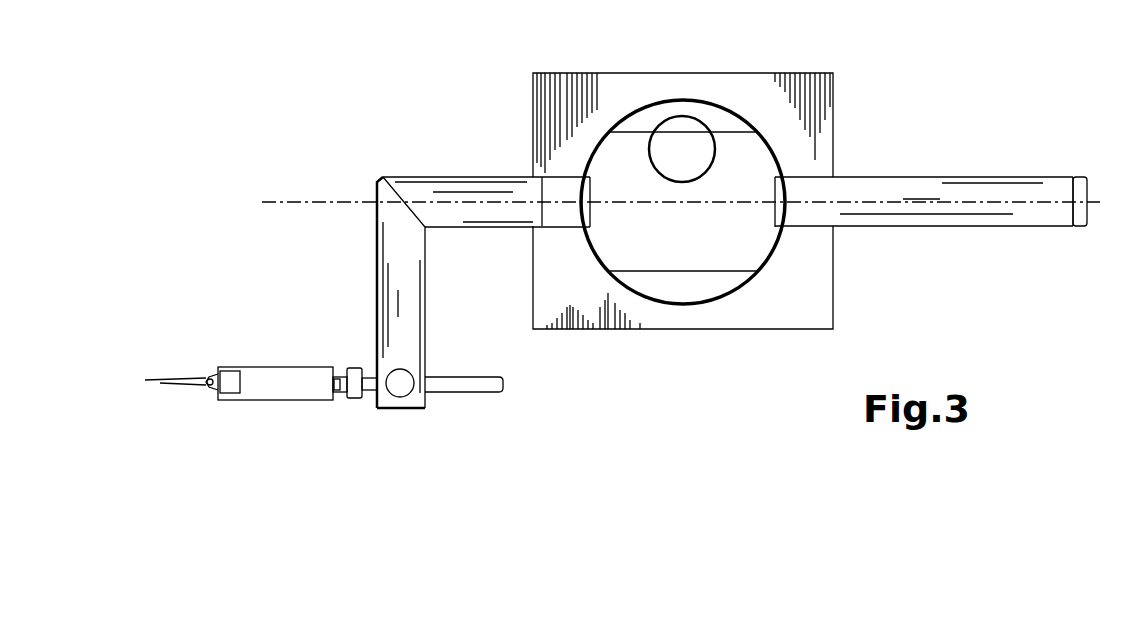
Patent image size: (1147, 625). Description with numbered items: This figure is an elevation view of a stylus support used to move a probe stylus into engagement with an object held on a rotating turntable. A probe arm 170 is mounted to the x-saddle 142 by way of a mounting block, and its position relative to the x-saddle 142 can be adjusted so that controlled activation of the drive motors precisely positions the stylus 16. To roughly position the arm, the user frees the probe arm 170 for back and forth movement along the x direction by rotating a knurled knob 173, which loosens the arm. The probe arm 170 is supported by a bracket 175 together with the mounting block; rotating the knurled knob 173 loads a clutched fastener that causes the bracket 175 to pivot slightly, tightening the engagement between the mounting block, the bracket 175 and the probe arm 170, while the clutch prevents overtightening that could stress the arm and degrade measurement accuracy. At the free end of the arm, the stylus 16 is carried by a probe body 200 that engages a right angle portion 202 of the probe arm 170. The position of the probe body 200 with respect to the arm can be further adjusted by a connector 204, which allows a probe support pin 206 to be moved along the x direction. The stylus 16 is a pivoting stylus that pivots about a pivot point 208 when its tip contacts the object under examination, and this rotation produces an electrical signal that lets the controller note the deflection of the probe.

The stylus 16 is at (168, 382).
The x-saddle 142 is at (737, 83).
The probe arm 170 is at (930, 188).
The knurled knob 173 is at (692, 135).
The bracket 175 is at (745, 248).
The probe body 200 is at (270, 385).
The right angle portion 202 is at (405, 297).
The connector 204 is at (402, 387).
The probe support pin 206 is at (460, 383).
The pivot point 208 is at (210, 375).